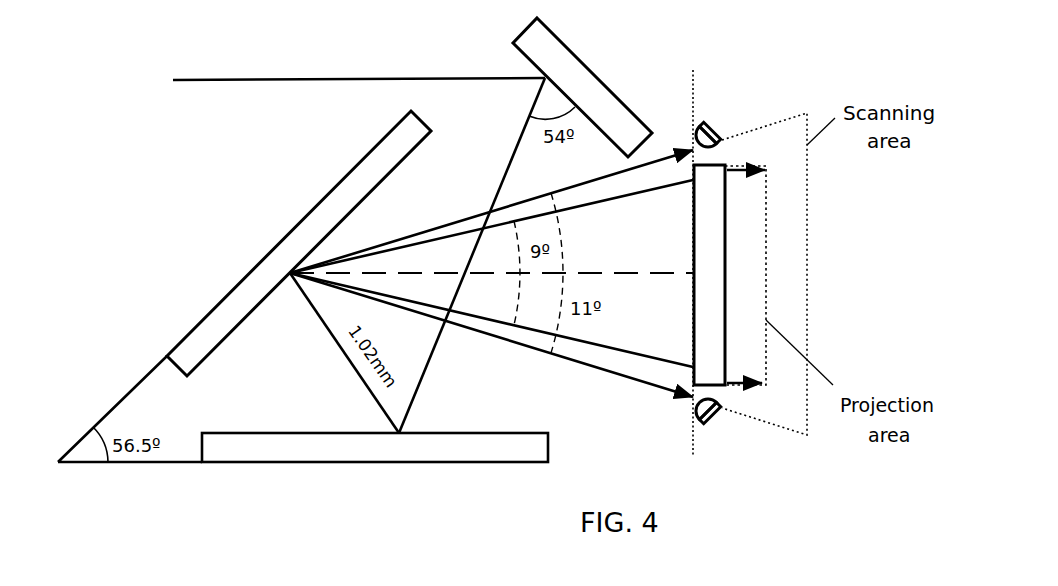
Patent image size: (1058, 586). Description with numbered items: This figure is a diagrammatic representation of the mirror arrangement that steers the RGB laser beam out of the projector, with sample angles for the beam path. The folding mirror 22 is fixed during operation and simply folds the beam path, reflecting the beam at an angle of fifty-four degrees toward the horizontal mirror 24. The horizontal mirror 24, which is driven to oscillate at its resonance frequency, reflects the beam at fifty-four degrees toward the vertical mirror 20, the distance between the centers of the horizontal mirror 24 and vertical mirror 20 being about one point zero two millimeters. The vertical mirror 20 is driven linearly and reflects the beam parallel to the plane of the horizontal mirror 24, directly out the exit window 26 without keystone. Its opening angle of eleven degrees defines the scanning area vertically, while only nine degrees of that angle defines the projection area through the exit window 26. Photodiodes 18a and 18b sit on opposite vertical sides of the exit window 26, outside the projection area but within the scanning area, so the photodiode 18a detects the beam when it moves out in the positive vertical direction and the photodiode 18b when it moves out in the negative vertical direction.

The photodiode 18a is at (720, 133).
The photodiode 18b is at (720, 413).
The vertical mirror 20 is at (247, 276).
The folding mirror 22 is at (559, 33).
The horizontal mirror 24 is at (252, 463).
The exit window 26 is at (709, 275).